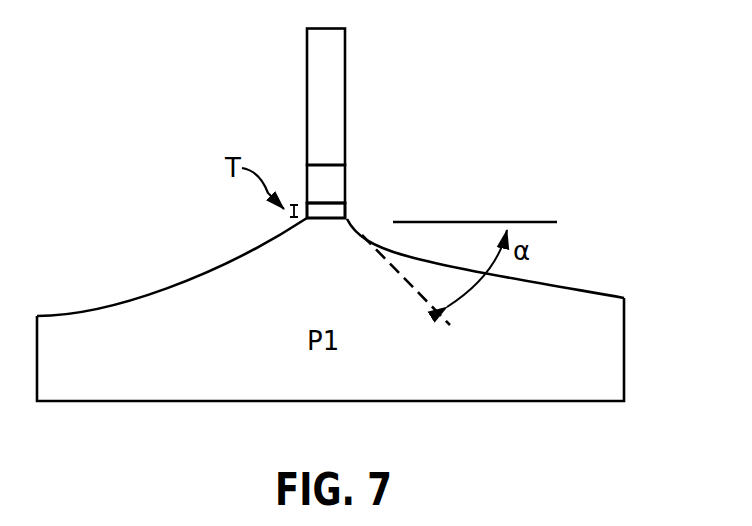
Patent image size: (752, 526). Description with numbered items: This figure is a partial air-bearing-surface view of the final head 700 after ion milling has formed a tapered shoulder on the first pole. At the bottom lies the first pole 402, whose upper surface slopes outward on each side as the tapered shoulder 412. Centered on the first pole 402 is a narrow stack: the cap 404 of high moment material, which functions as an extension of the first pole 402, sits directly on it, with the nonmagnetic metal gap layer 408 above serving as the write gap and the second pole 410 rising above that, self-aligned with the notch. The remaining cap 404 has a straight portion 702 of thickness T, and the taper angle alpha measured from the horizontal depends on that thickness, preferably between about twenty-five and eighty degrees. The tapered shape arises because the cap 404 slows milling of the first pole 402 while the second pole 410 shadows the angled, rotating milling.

The final head 700 is at (382, 215).
The first pole 402 is at (624, 360).
The shoulder 412 is at (240, 244).
The second pole 410 is at (347, 105).
The metal gap layer 408 is at (347, 176).
The cap 404 is at (347, 213).
The straight portion 702 is at (326, 210).